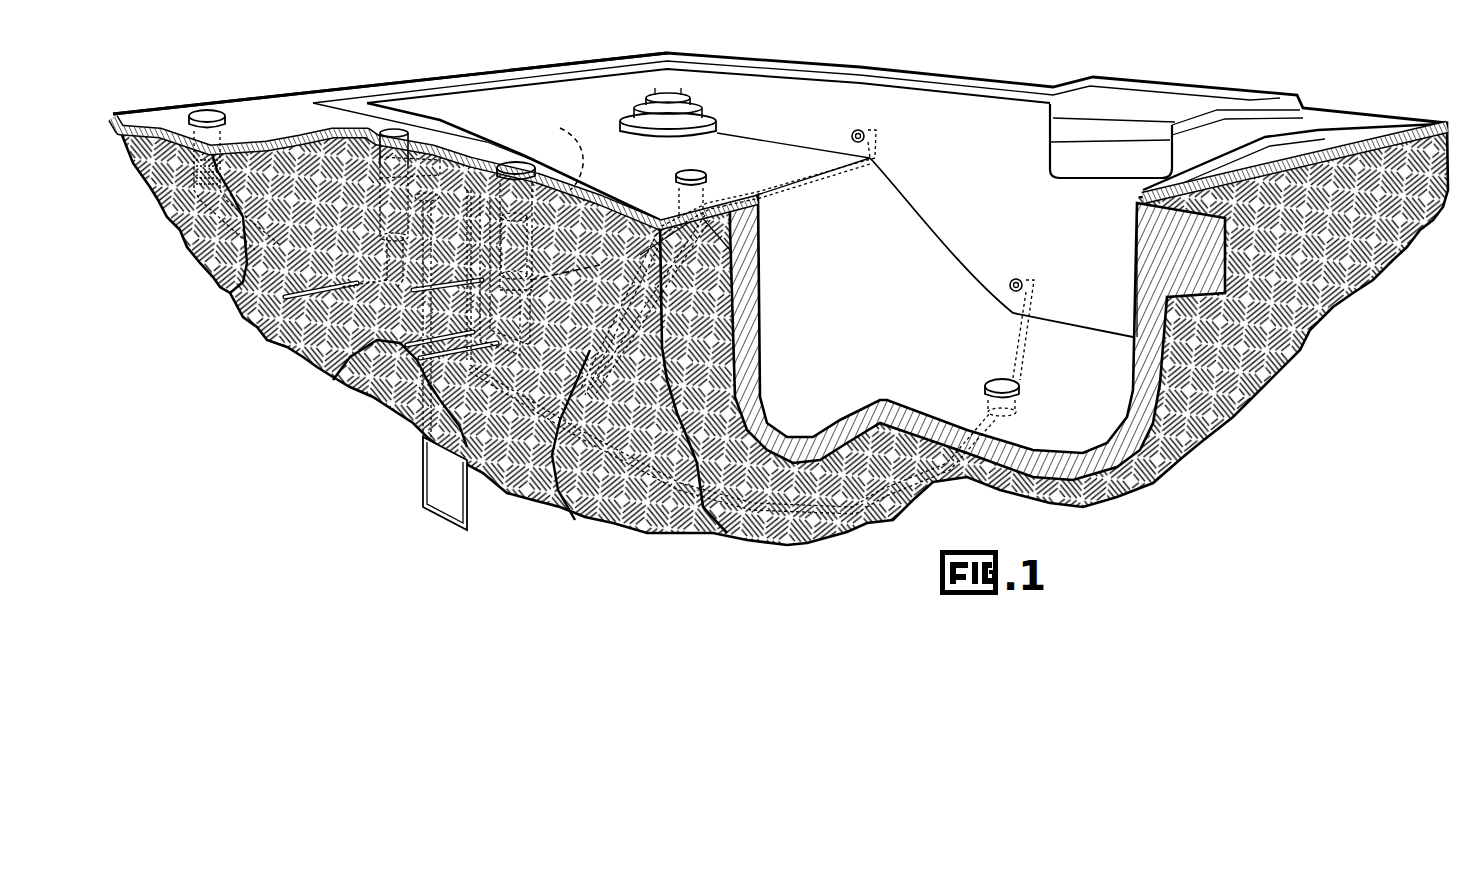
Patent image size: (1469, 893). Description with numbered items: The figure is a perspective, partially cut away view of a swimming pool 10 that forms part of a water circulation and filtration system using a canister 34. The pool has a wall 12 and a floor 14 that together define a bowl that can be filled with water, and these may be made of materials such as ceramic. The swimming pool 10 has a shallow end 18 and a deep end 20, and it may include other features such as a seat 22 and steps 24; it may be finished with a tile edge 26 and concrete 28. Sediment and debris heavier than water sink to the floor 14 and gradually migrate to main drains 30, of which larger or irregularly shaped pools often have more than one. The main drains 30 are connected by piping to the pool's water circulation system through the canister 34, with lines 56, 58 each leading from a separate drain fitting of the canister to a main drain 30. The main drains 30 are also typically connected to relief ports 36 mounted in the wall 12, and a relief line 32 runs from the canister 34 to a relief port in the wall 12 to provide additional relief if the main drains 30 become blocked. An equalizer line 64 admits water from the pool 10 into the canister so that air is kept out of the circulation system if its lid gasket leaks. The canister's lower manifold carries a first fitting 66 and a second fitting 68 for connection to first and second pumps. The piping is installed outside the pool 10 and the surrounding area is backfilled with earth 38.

The swimming pool 10 is at (972, 140).
The wall 12 is at (790, 104).
The floor 14 is at (1080, 385).
The shallow end 18 is at (746, 166).
The deep end 20 is at (948, 376).
The seat 22 is at (1093, 150).
The steps 24 is at (662, 96).
The tile edge 26 is at (347, 103).
The concrete 28 is at (270, 104).
The main drain 30 is at (690, 171).
The relief line 32 is at (425, 472).
The canister 34 is at (521, 166).
The relief port 36 is at (852, 137).
The earth 38 is at (242, 283).
The line 56 is at (512, 474).
The line 58 is at (554, 498).
The equalizer line 64 is at (575, 135).
The first fitting 66 is at (380, 388).
The second fitting 68 is at (345, 368).